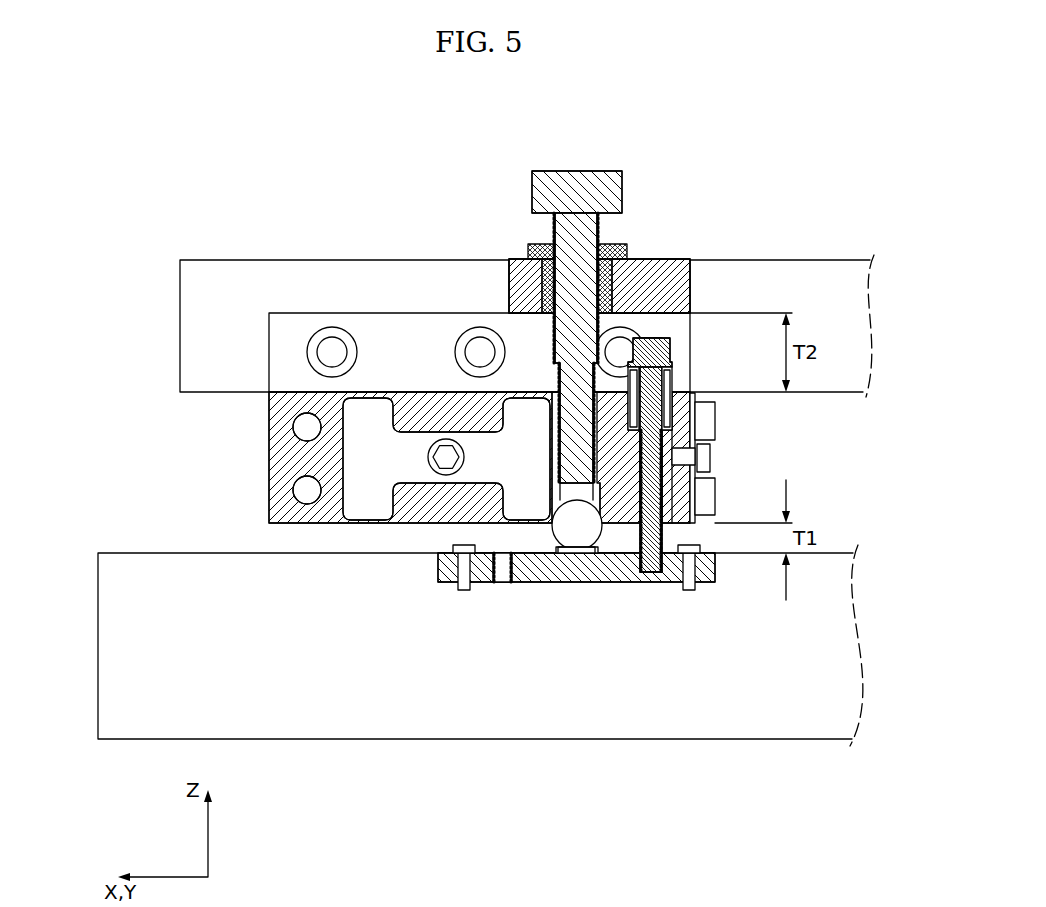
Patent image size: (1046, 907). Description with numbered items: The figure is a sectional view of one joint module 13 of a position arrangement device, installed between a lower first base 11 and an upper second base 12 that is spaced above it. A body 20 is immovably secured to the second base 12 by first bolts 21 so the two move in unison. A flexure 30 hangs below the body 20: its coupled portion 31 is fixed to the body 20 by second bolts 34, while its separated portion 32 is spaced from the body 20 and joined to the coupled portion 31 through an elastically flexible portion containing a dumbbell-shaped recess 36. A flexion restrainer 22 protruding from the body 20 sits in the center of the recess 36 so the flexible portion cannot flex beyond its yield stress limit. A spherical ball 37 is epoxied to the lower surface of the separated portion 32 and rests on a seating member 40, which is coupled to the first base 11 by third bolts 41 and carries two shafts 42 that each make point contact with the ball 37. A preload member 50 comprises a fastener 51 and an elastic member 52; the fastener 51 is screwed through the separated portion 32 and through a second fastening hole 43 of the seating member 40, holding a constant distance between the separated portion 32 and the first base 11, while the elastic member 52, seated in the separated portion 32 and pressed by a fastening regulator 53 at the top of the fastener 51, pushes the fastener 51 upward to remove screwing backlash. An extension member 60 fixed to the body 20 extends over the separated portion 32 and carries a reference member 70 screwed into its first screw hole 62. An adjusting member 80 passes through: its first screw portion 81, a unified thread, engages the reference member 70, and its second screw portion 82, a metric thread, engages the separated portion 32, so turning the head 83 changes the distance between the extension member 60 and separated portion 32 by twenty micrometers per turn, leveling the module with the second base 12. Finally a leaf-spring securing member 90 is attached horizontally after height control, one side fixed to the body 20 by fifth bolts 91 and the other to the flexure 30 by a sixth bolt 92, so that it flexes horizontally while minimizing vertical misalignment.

The first base 11 is at (113, 650).
The second base 12 is at (200, 337).
The joint module 13 is at (318, 128).
The body 20 is at (479, 305).
The first bolts 21 is at (476, 350).
The flexion restrainer 22 is at (449, 456).
The flexure 30 is at (450, 497).
The coupled portion 31 is at (288, 461).
The separated portion 32 is at (676, 490).
The second bolts 34 is at (302, 491).
The recess 36 is at (407, 466).
The spherical ball 37 is at (560, 548).
The seating member 40 is at (576, 591).
The third bolts 41 is at (463, 590).
The shafts 42 is at (594, 555).
The second fastening hole 43 is at (660, 573).
The preload member 50 is at (701, 426).
The fastener 51 is at (662, 528).
The elastic member 52 is at (668, 373).
The fastening regulator 53 is at (664, 357).
The extension member 60 is at (604, 267).
The first screw hole 62 is at (602, 262).
The reference member 70 is at (530, 244).
The adjusting member 80 is at (564, 339).
The first screw portion 81 is at (546, 290).
The second screw portion 82 is at (575, 415).
The head 83 is at (610, 185).
The securing member 90 is at (694, 410).
The fifth bolts 91 is at (706, 428).
The sixth bolt 92 is at (710, 456).